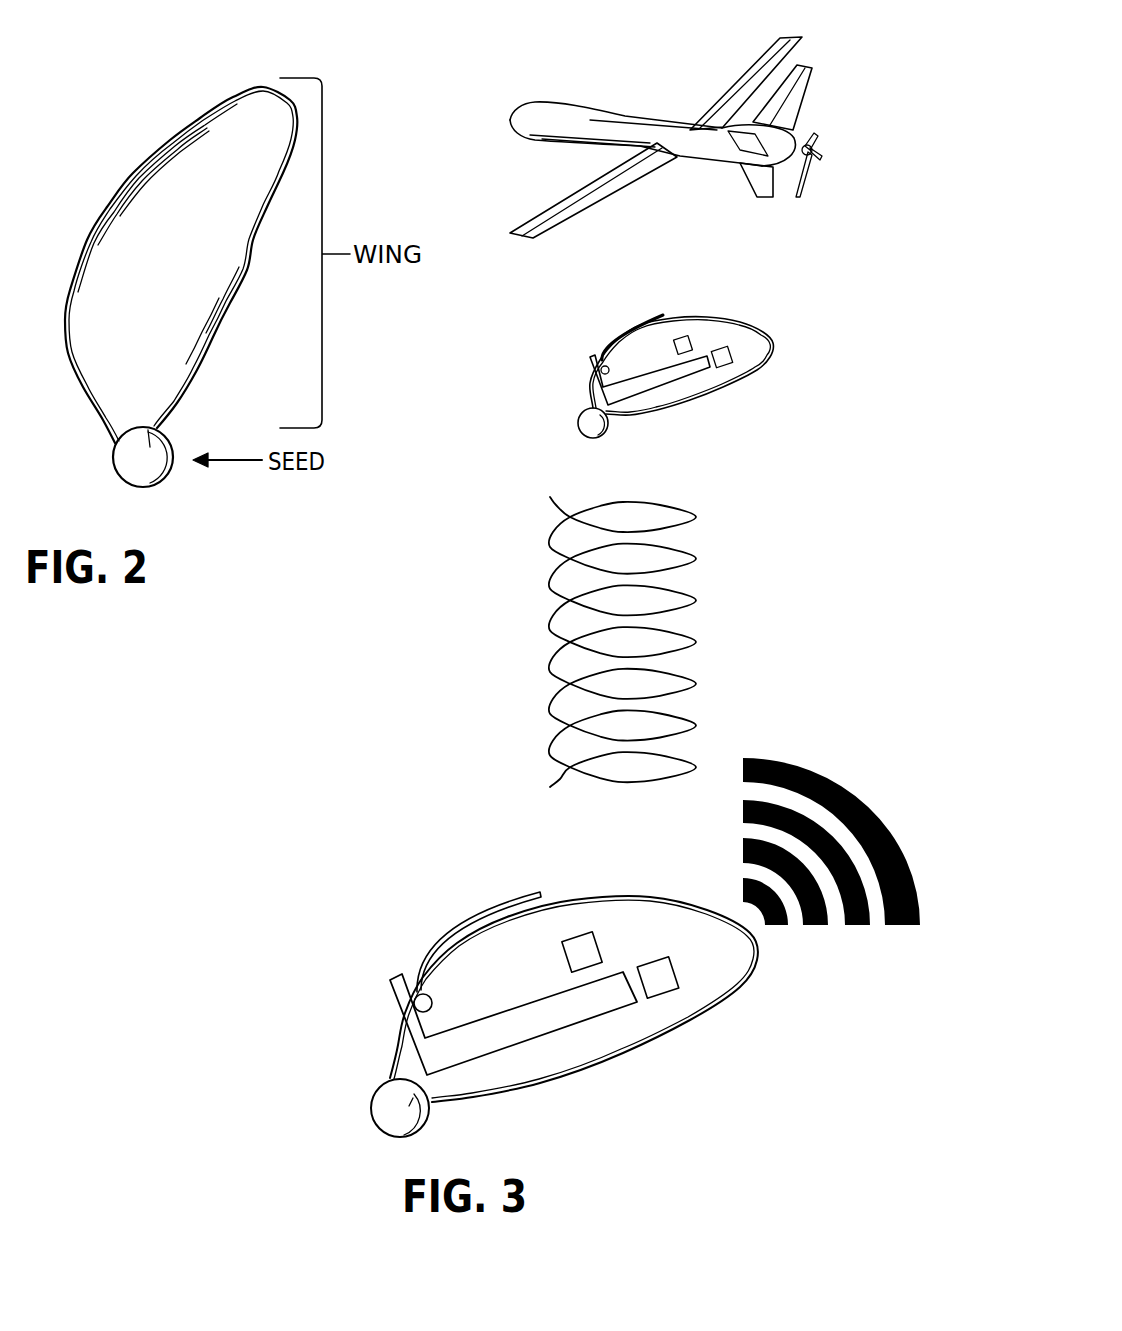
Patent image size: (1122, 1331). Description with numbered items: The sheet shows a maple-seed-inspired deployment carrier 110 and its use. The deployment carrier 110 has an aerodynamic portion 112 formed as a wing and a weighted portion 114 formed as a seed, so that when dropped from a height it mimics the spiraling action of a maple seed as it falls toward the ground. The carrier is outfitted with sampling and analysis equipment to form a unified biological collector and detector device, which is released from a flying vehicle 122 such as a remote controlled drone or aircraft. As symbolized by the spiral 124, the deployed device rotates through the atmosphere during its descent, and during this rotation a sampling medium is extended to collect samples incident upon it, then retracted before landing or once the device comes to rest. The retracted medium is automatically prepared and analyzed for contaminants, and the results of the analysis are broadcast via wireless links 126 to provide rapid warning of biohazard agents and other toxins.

In FIG. 2, the deployment carrier 110 is at (220, 98).
In FIG. 2, the aerodynamic portion 112 is at (128, 230).
In FIG. 2, the weighted portion 114 is at (125, 460).
In FIG. 3, the flying vehicle 122 is at (542, 110).
In FIG. 3, the spiral 124 is at (548, 578).
In FIG. 3, the wireless links 126 is at (812, 768).